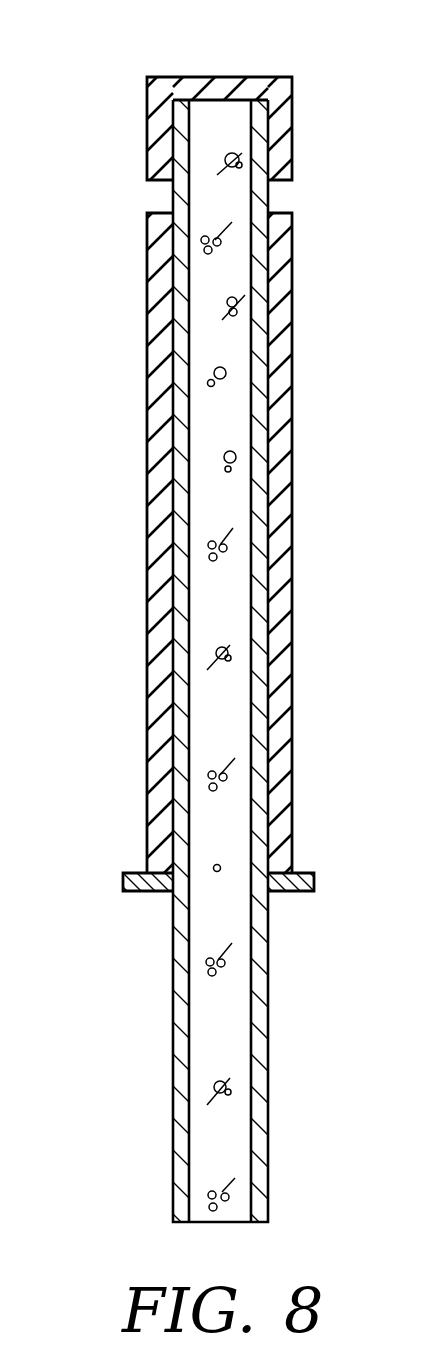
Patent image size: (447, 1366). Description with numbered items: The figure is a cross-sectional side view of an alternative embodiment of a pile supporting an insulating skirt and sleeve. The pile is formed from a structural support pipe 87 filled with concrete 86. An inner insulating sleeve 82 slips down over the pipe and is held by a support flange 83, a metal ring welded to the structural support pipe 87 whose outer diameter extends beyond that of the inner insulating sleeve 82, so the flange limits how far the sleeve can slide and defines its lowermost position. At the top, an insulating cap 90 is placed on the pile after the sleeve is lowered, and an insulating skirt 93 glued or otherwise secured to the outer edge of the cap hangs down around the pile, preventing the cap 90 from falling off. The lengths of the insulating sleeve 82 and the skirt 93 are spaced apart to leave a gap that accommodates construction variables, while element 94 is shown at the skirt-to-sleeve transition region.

The inner insulating sleeve 82 is at (158, 668).
The support flange 83 is at (133, 890).
The concrete 86 is at (212, 1010).
The structural support pipe 87 is at (232, 661).
The insulating cap 90 is at (198, 89).
The insulating skirt 93 is at (260, 93).
The inner tube neck 94 is at (280, 196).